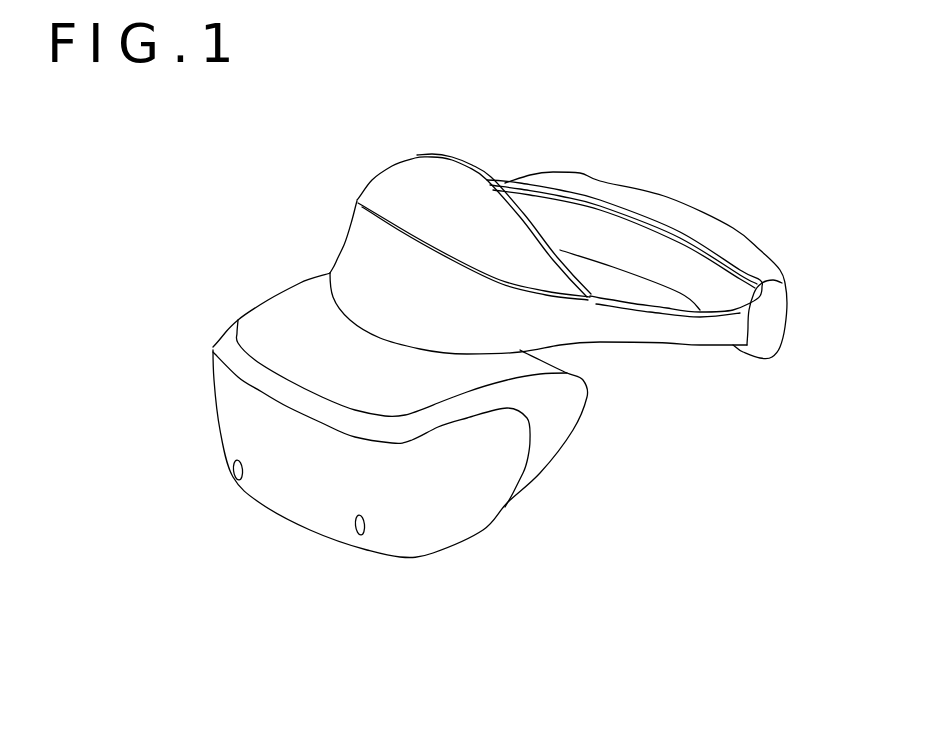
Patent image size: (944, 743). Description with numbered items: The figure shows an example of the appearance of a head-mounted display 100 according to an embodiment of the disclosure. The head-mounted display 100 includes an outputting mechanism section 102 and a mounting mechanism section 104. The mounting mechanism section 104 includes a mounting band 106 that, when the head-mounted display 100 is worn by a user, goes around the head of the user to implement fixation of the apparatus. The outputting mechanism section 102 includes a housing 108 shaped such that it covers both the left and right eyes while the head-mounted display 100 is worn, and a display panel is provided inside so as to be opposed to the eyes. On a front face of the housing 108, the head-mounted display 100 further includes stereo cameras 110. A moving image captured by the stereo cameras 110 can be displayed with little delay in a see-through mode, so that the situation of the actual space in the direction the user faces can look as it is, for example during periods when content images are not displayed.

The head-mounted display 100 is at (303, 221).
The outputting mechanism section 102 is at (172, 267).
The mounting mechanism section 104 is at (793, 212).
The mounting band 106 is at (668, 344).
The housing 108 is at (487, 530).
The stereo cameras 110 is at (241, 479).